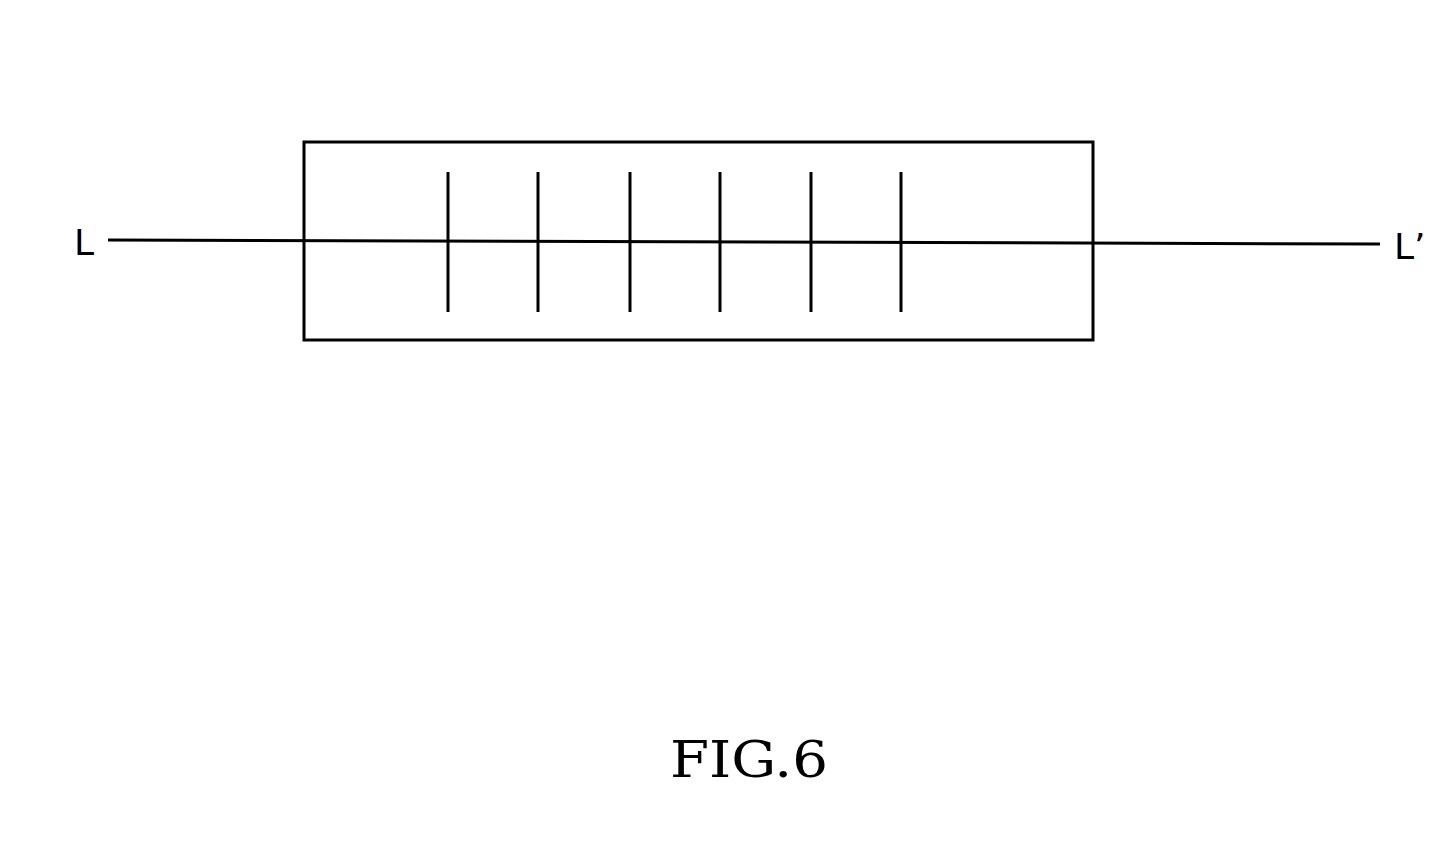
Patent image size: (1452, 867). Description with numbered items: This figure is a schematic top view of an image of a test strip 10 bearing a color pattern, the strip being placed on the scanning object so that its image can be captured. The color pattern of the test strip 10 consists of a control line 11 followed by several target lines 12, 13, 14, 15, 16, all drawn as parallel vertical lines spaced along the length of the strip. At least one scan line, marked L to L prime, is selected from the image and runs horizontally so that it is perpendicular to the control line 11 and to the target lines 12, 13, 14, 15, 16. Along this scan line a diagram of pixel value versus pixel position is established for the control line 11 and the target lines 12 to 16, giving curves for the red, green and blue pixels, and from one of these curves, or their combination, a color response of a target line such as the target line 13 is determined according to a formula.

The test strip 10 is at (370, 140).
The control line 11 is at (448, 222).
The target line 12 is at (538, 222).
The target line 13 is at (630, 222).
The target line 14 is at (720, 222).
The target line 15 is at (811, 222).
The target line 16 is at (901, 222).